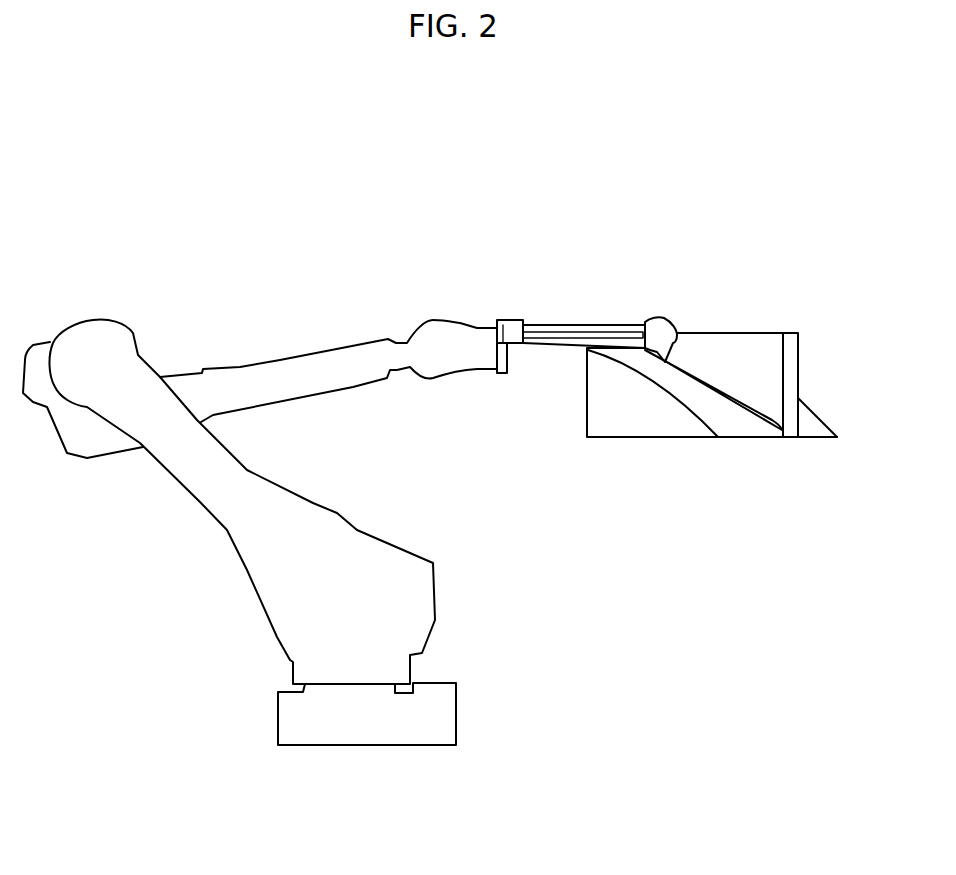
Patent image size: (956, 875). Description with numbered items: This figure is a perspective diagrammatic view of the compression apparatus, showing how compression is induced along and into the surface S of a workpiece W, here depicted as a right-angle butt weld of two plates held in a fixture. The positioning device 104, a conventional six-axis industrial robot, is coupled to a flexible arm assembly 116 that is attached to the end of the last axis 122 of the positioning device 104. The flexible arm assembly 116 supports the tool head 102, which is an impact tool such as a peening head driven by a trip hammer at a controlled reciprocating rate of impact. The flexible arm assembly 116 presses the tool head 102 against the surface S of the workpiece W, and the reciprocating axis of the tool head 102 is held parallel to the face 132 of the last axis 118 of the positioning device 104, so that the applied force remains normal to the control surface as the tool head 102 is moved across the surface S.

The positioning device 104 is at (186, 511).
The last axis 118 is at (280, 360).
The last axis 122 is at (490, 323).
The face 132 is at (497, 357).
The flexible arm assembly 116 is at (580, 321).
The tool head 102 is at (667, 327).
The workpiece W is at (738, 330).
The surface S is at (765, 423).